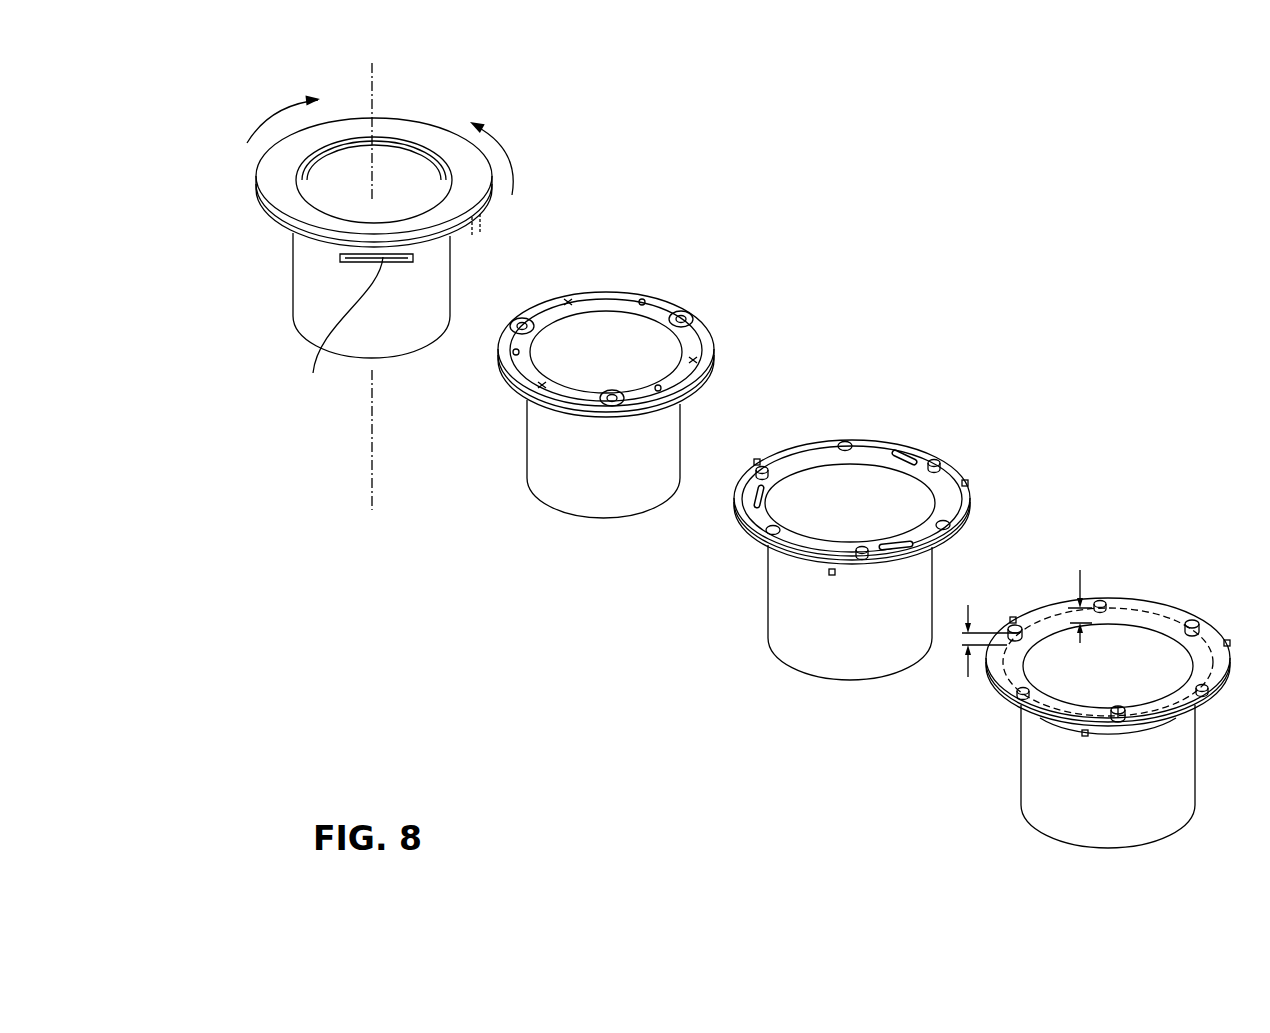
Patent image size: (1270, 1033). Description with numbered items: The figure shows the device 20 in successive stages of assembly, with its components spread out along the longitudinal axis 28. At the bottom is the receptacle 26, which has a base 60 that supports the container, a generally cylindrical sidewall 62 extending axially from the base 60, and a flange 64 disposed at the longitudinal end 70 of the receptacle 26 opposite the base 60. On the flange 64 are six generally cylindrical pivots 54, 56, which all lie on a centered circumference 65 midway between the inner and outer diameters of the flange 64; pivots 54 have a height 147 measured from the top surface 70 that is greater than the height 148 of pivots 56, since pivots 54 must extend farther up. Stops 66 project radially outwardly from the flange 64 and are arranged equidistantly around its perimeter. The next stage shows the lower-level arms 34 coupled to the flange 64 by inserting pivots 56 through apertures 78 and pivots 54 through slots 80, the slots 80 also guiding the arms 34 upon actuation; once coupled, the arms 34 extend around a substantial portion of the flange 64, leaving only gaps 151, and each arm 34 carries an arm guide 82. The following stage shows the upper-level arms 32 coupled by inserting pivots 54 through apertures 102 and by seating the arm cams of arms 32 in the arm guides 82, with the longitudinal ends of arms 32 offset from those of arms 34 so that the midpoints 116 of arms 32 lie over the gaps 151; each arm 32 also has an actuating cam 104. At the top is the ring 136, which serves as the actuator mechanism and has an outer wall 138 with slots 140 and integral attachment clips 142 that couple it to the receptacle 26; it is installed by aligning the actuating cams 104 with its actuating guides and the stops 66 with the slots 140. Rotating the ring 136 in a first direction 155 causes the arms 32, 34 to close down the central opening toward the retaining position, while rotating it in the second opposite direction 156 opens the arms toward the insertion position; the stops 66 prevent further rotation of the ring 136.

The device 20 is at (243, 104).
The receptacle 26 is at (1003, 822).
The longitudinal axis 28 is at (373, 423).
The arms 32 is at (598, 295).
The arms 34 is at (953, 480).
The pivots 54 is at (1018, 622).
The pivots 56 is at (1103, 600).
The base 60 is at (388, 362).
The sidewall 62 is at (292, 255).
The flange 64 is at (1000, 688).
The circumference 65 is at (1137, 607).
The stops 66 is at (758, 458).
The longitudinal end 70 is at (1140, 597).
The apertures 78 is at (848, 442).
The slots 80 is at (937, 463).
The arm guides 82 is at (901, 452).
The apertures 102 is at (518, 322).
The actuating cams 104 is at (643, 300).
The midpoints 116 is at (566, 299).
The ring 136 is at (403, 130).
The outer wall 138 is at (316, 248).
The slots 140 is at (341, 330).
The attachment clips 142 is at (480, 237).
The height 147 is at (965, 665).
The height 148 is at (1082, 590).
The gaps 151 is at (814, 450).
The first direction 155 is at (280, 105).
The second direction 156 is at (508, 157).